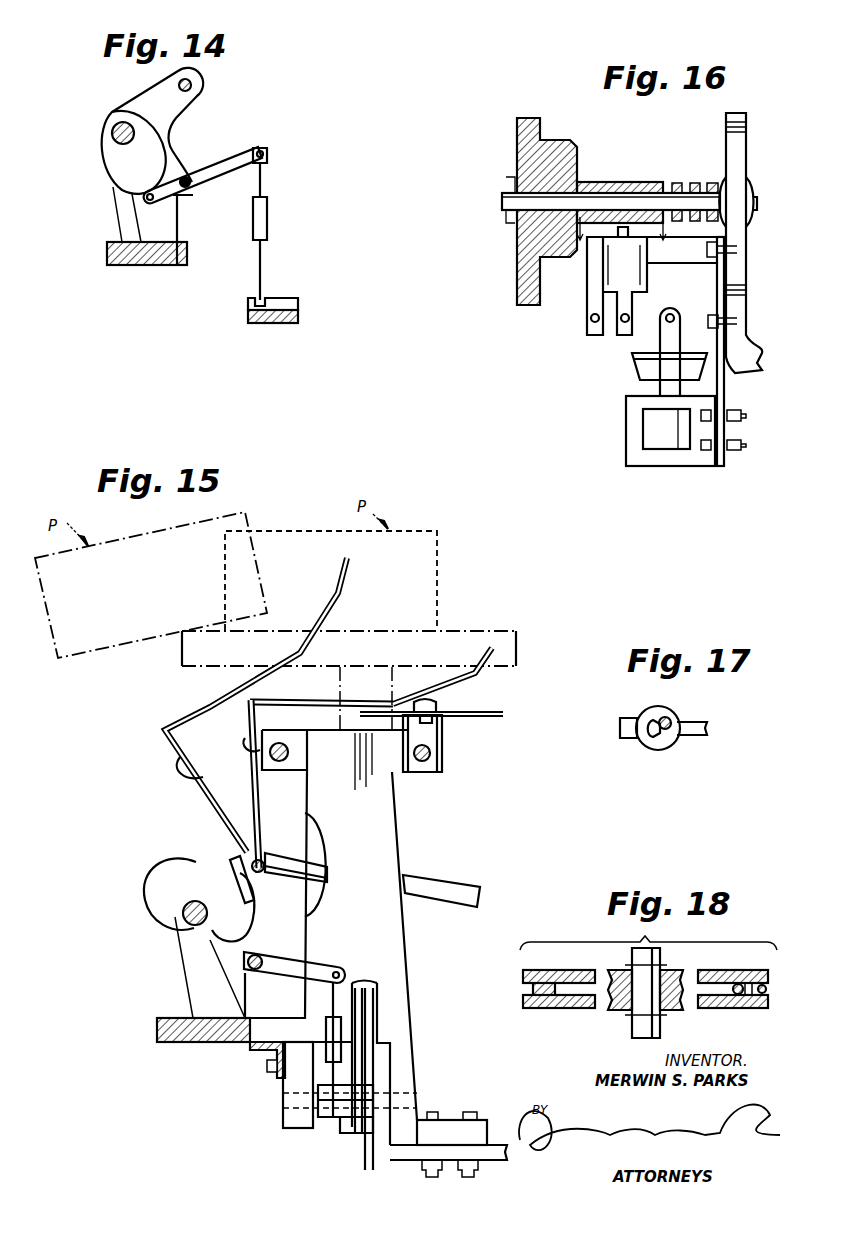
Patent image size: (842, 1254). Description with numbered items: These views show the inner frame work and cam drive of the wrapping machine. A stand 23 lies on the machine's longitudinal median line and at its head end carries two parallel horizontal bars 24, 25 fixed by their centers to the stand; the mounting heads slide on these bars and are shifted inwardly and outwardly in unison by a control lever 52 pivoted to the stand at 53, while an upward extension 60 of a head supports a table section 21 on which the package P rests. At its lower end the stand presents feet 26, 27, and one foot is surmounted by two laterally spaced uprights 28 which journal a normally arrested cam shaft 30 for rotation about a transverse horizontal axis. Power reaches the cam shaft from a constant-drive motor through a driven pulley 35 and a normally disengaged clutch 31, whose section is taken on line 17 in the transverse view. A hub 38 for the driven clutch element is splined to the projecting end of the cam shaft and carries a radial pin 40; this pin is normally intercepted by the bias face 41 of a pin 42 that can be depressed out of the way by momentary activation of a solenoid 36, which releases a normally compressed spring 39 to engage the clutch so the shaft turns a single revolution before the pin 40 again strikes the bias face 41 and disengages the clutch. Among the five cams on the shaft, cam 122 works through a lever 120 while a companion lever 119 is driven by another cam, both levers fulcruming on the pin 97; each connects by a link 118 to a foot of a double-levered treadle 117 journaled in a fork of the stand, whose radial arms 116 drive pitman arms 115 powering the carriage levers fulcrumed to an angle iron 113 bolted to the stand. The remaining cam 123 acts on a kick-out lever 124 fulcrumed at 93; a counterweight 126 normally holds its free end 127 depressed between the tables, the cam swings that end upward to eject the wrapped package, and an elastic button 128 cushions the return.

In FIG. 16, the section line 17— 17 is at (634, 229).
In FIG. 15, the table section 21 is at (517, 638).
In FIG. 15, the stand 23 is at (388, 832).
In FIG. 15, the horizontal bar 24 is at (431, 753).
In FIG. 15, the horizontal bar 25 is at (281, 743).
In FIG. 15, the foot 26 is at (454, 1124).
In FIG. 14, the foot 27 is at (129, 265).
In FIG. 15, the foot 27 is at (170, 1043).
In FIG. 14, the upright 28 is at (168, 116).
In FIG. 16, the upright 28 is at (748, 146).
In FIG. 15, the upright 28 is at (197, 987).
In FIG. 14, the cam shaft 30 is at (111, 135).
In FIG. 16, the cam shaft 30 is at (759, 203).
In FIG. 15, the cam shaft 30 is at (183, 925).
In FIG. 16, the clutch 31 is at (585, 140).
In FIG. 16, the driven pulley 35 is at (519, 152).
In FIG. 16, the solenoid 36 is at (667, 452).
In FIG. 16, the hub 38 is at (616, 182).
In FIG. 16, the spring 39 is at (698, 183).
In FIG. 16, the radial pin 40 is at (629, 239).
In FIG. 17, the radial pin 40 is at (670, 717).
In FIG. 17, the bias face 41 is at (665, 740).
In FIG. 16, the pin 42 is at (636, 233).
In FIG. 17, the pin 42 is at (653, 738).
In FIG. 15, the control lever 52 is at (500, 711).
In FIG. 15, the pivot 53 is at (437, 705).
In FIG. 15, the upward extension 60 is at (340, 685).
In FIG. 14, the pivot 93 is at (192, 84).
In FIG. 15, the pivot 93 is at (263, 873).
In FIG. 14, the pin 97 is at (188, 188).
In FIG. 15, the pin 97 is at (260, 979).
In FIG. 18, the pin 97 is at (643, 1025).
In FIG. 15, the angle iron 113 is at (278, 1078).
In FIG. 15, the pitman arm 115 is at (356, 1047).
In FIG. 15, the arm 116 is at (369, 1065).
In FIG. 14, the double-levered treadle 117 is at (288, 298).
In FIG. 15, the double-levered treadle 117 is at (350, 1125).
In FIG. 14, the link 118 is at (266, 181).
In FIG. 15, the link 118 is at (330, 1002).
In FIG. 18, the link 118 is at (768, 990).
In FIG. 15, the cam-operated lever 119 is at (312, 963).
In FIG. 18, the cam-operated lever 119 is at (717, 972).
In FIG. 14, the cam-operated lever 120 is at (221, 164).
In FIG. 14, the cam 122 is at (115, 170).
In FIG. 15, the cam 123 is at (180, 865).
In FIG. 15, the kick-out lever 124 is at (200, 712).
In FIG. 15, the counterweight 126 is at (457, 886).
In FIG. 15, the free end 127 is at (442, 673).
In FIG. 15, the elastic button 128 is at (258, 745).